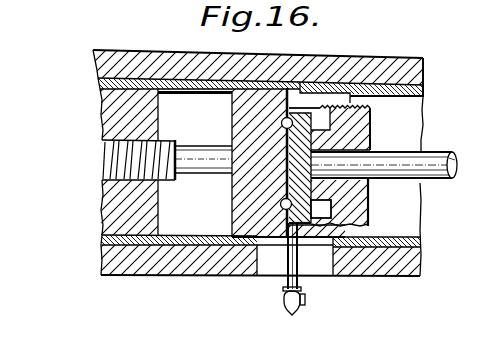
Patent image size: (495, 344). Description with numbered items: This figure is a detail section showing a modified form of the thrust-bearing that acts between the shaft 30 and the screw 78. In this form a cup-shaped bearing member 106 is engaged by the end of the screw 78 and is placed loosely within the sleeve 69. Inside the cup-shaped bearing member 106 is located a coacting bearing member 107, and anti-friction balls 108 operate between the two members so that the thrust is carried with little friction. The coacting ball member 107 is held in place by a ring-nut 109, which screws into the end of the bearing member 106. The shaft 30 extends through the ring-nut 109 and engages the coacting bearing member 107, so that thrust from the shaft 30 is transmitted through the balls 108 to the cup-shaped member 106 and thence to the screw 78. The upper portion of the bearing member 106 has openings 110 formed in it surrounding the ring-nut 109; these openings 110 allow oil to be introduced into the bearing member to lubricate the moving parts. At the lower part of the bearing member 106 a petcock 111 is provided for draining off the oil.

The shaft 30 is at (440, 152).
The sleeve 69 is at (403, 240).
The screw 78 is at (118, 159).
The cup-shaped bearing member 106 is at (248, 208).
The coacting bearing member 107 is at (303, 207).
The anti-friction balls 108 is at (281, 123).
The ring-nut 109 is at (370, 207).
The openings 110 is at (336, 101).
The petcock 111 is at (284, 300).